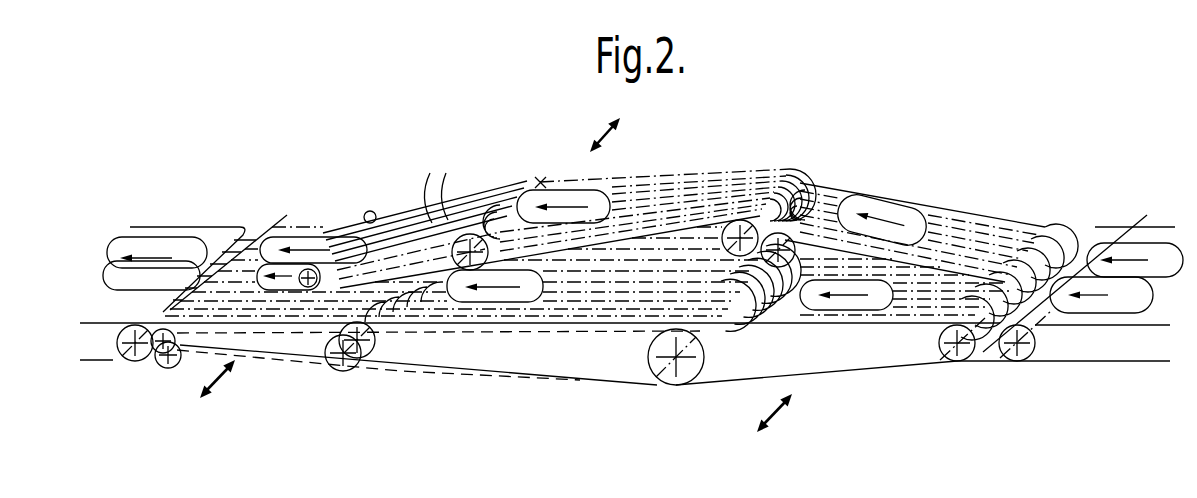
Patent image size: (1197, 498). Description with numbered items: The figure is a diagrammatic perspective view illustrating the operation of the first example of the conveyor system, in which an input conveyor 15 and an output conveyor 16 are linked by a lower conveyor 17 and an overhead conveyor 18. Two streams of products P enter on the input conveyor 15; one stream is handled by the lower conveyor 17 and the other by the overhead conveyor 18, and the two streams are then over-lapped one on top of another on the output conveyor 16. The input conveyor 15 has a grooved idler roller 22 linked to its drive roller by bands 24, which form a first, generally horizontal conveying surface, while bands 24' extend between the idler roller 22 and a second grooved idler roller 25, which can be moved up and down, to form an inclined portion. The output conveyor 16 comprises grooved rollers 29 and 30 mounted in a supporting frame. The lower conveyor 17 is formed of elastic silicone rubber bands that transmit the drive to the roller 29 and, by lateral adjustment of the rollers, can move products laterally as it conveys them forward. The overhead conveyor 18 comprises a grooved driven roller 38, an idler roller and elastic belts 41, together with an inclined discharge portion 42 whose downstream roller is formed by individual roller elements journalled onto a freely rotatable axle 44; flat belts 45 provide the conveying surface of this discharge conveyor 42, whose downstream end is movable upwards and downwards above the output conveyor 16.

The input conveyor 15 is at (878, 182).
The output conveyor 16 is at (280, 346).
The lower conveyor 17 is at (573, 357).
The overhead conveyor 18 is at (664, 200).
The grooved idler roller 22 is at (1068, 226).
The bands 24 is at (843, 332).
The bands 24' is at (919, 223).
The second grooved idler roller 25 is at (795, 220).
The grooved roller 29 is at (363, 358).
The grooved roller 30 is at (181, 352).
The grooved driven roller 38 is at (730, 222).
The elastic belts 41 is at (762, 205).
The inclined discharge portion 42 is at (472, 205).
The freely rotatable axle 44 is at (317, 272).
The flat belts 45 is at (429, 188).
The products P is at (582, 198).